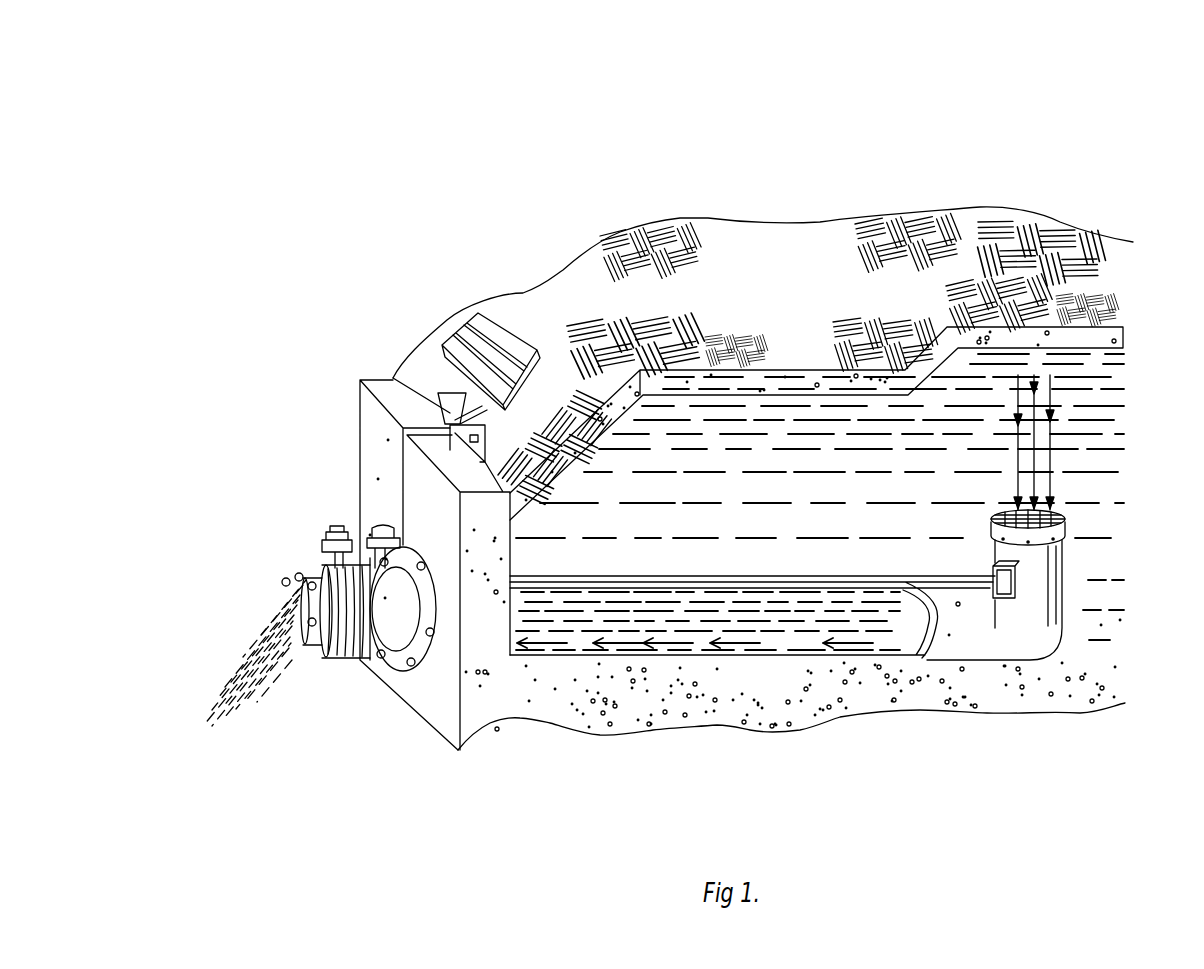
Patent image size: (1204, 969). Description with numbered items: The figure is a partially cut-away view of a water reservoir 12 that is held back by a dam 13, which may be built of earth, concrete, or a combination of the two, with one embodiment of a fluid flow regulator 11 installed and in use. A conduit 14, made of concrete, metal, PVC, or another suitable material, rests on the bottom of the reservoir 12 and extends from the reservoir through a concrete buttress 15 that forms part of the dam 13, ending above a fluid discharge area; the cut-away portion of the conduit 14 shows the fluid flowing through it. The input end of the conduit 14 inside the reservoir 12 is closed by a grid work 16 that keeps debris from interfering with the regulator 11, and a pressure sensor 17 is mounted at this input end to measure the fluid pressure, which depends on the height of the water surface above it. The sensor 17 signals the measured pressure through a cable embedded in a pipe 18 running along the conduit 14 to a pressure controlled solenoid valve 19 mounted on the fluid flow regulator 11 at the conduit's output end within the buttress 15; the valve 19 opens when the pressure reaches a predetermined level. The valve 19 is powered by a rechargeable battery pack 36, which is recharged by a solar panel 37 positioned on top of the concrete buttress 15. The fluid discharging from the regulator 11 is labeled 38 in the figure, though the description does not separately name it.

The fluid flow regulator 11 is at (310, 556).
The reservoir 12 is at (872, 565).
The dam 13 is at (557, 337).
The conduit 14 is at (927, 660).
The concrete buttress 15 is at (367, 477).
The grid work 16 is at (1060, 517).
The pressure sensor 17 is at (1063, 595).
The pipe 18 is at (862, 584).
The pressure controlled solenoid valve 19 is at (325, 646).
The rechargeable battery pack 36 is at (398, 404).
The solar panel 37 is at (437, 357).
The water jet 38 is at (248, 633).